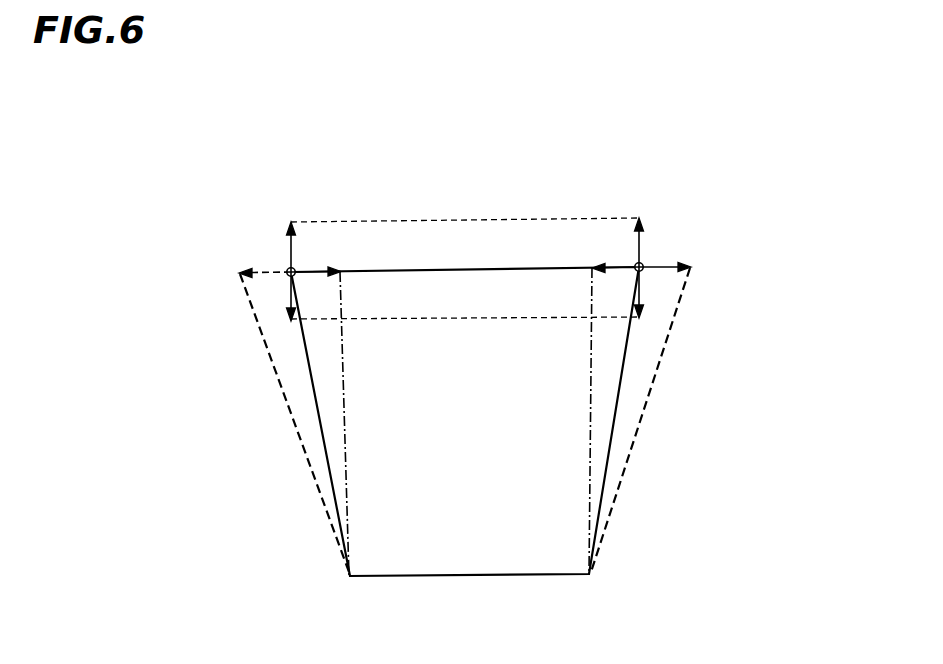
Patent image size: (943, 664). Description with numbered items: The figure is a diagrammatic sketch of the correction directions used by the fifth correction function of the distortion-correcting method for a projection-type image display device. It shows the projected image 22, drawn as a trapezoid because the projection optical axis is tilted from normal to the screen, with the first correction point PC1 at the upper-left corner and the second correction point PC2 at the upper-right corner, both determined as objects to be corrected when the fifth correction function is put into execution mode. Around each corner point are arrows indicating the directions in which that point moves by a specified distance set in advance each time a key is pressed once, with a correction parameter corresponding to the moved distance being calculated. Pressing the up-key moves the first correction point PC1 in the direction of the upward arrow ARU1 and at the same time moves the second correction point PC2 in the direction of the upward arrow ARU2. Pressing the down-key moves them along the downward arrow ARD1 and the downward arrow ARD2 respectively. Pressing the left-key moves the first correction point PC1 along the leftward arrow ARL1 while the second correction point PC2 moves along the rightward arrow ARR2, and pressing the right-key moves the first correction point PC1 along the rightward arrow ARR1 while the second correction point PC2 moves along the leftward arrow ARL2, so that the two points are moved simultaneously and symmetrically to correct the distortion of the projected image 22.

The projected image 22 is at (462, 557).
The first correction point PC1 is at (287, 269).
The second correction point PC2 is at (645, 263).
The upward arrow ARU1 is at (293, 240).
The downward arrow ARD1 is at (290, 302).
The rightward arrow ARR1 is at (317, 272).
The leftward arrow ARL1 is at (248, 294).
The upward arrow ARU2 is at (641, 242).
The downward arrow ARD2 is at (643, 292).
The leftward arrow ARL2 is at (613, 267).
The rightward arrow ARR2 is at (665, 272).